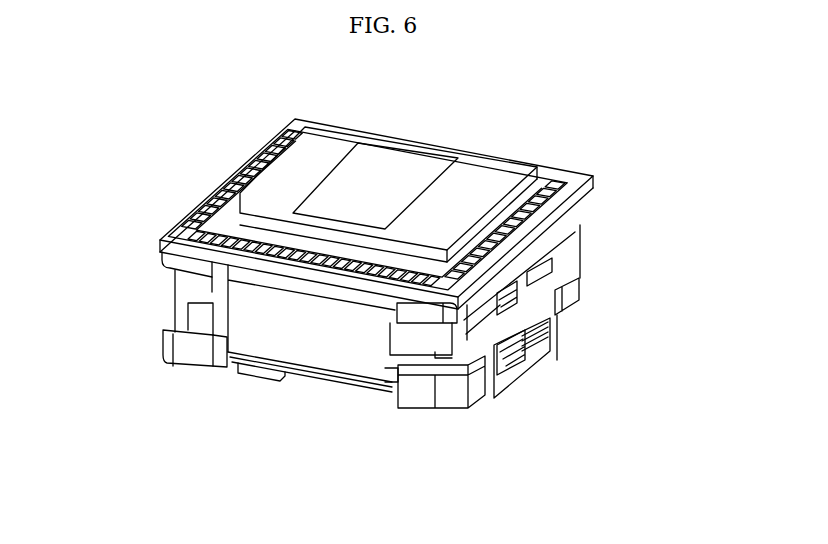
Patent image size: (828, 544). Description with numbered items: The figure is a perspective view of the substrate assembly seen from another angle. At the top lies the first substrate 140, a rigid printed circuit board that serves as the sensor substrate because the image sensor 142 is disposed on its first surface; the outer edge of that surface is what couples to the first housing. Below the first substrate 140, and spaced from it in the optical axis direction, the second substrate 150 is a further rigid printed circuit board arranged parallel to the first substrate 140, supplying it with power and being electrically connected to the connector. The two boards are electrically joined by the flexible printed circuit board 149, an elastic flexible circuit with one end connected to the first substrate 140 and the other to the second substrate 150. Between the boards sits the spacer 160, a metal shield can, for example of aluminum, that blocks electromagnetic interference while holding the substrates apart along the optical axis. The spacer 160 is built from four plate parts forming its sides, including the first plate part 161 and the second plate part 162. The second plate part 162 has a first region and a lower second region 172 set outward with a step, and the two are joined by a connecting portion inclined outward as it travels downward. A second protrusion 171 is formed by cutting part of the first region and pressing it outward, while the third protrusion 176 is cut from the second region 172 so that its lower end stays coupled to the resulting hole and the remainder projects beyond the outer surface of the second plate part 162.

The first substrate 140 is at (584, 196).
The image sensor 142 is at (388, 173).
The flexible printed circuit board 149 is at (320, 342).
The second substrate 150 is at (574, 290).
The spacer 160 is at (190, 324).
The first plate part 161 is at (423, 353).
The second plate part 162 is at (574, 247).
The second protrusion 171 is at (548, 273).
The second region 172 is at (553, 341).
The third protrusion 176 is at (524, 354).